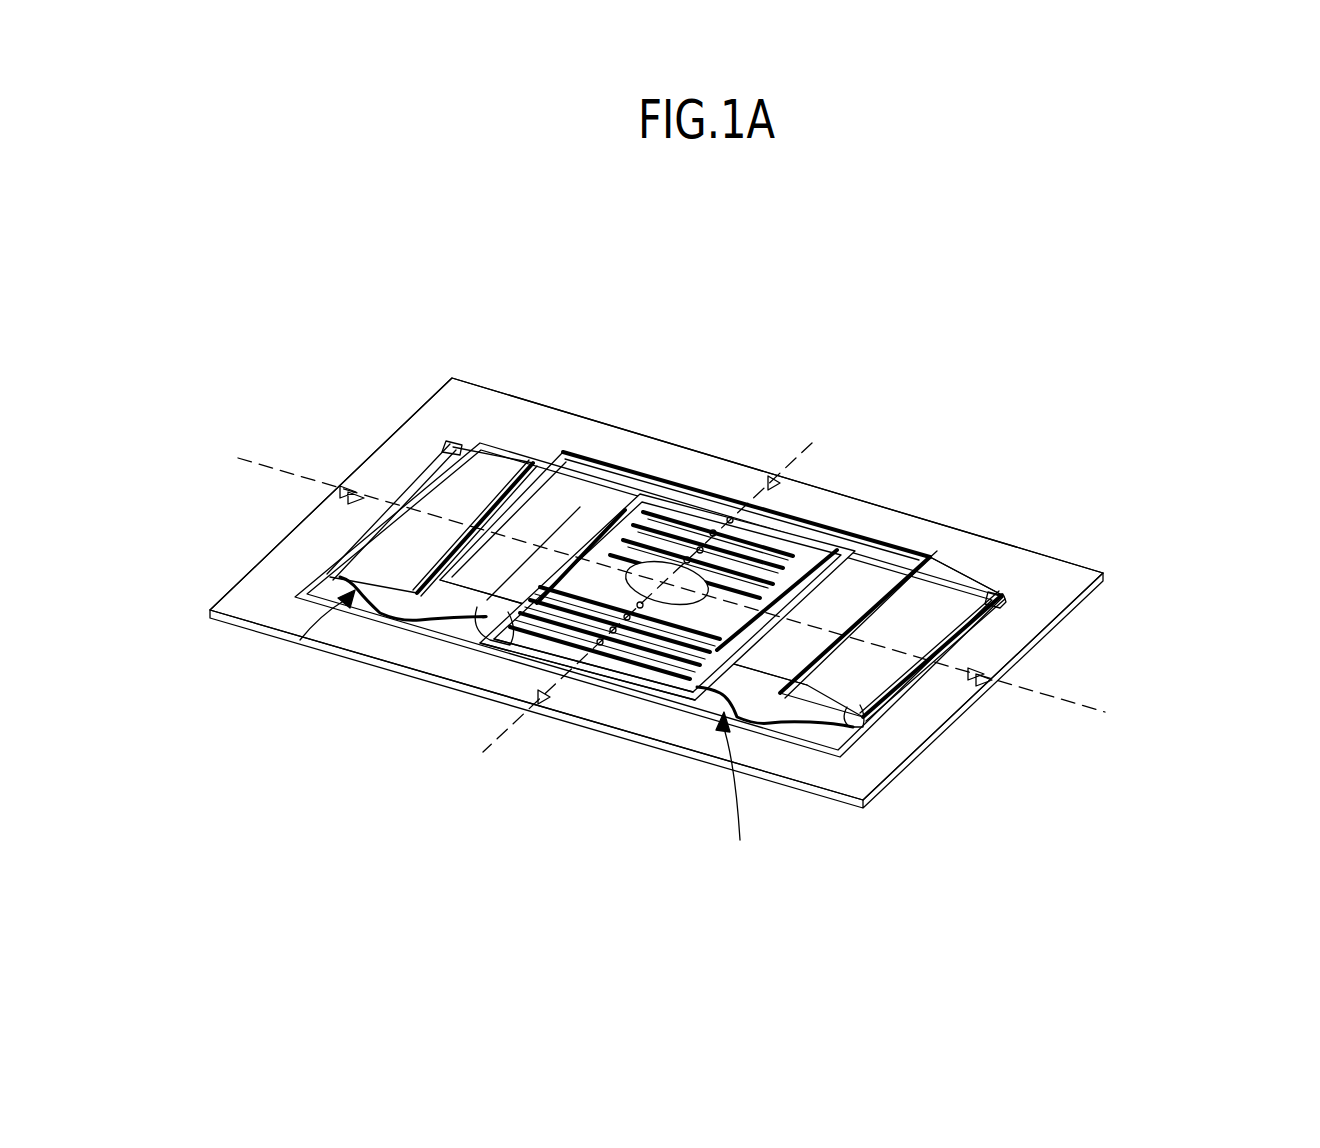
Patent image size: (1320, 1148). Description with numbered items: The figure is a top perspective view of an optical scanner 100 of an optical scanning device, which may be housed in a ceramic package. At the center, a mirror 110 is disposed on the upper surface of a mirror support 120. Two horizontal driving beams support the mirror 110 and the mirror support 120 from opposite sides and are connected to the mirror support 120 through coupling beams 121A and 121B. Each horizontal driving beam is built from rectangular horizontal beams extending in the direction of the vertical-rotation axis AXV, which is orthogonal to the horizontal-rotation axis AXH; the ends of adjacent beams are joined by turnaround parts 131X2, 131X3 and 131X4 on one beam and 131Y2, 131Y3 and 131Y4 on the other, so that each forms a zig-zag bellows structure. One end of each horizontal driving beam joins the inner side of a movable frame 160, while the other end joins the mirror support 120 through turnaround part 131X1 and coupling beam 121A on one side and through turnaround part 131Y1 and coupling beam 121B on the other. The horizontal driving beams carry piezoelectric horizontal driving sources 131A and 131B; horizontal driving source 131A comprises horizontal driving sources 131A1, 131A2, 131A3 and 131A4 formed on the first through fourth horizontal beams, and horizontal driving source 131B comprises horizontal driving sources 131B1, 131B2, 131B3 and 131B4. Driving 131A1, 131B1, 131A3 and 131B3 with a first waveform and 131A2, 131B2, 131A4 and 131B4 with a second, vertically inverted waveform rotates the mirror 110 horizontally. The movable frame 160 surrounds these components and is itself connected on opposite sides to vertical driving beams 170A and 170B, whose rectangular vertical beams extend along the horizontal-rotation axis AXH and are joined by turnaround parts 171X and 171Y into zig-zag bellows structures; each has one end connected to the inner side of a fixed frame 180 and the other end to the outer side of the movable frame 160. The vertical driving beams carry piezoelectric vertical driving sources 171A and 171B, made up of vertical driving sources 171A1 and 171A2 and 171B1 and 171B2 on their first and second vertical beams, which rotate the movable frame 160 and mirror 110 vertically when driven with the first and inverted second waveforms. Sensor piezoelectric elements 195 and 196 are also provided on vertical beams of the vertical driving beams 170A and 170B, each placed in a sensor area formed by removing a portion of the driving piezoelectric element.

The optical scanner 100 is at (244, 296).
The mirror 110 is at (687, 575).
The mirror support 120 is at (815, 653).
The coupling beam 121A is at (663, 485).
The coupling beam 121B is at (593, 575).
The horizontal driving source 131A is at (1068, 357).
The horizontal driving source 131A1 is at (717, 553).
The horizontal driving source 131A2 is at (740, 562).
The horizontal driving source 131A3 is at (767, 550).
The horizontal driving source 131A4 is at (793, 558).
The horizontal driving source 131B is at (716, 846).
The horizontal driving source 131B1 is at (680, 627).
The horizontal driving source 131B2 is at (657, 640).
The horizontal driving source 131B3 is at (633, 630).
The horizontal driving source 131B4 is at (607, 640).
The turnaround part 131X1 is at (640, 530).
The turnaround part 131X2 is at (700, 585).
The turnaround part 131X3 is at (605, 545).
The turnaround part 131X4 is at (735, 567).
The turnaround part 131Y1 is at (400, 605).
The turnaround part 131Y2 is at (730, 600).
The turnaround part 131Y3 is at (567, 572).
The turnaround part 131Y4 is at (790, 645).
The movable frame 160 is at (895, 727).
The vertical driving beam 170A is at (759, 791).
The vertical driving beam 170B is at (300, 640).
The vertical driving source 171A is at (1150, 432).
The vertical driving source 171A1 is at (935, 562).
The vertical driving source 171A2 is at (975, 600).
The vertical driving source 171B is at (382, 357).
The vertical driving source 171B1 is at (503, 460).
The vertical driving source 171B2 is at (580, 483).
The turnaround part 171X is at (765, 715).
The turnaround part 171Y is at (400, 610).
The fixed frame 180 is at (880, 738).
The sensor piezoelectric element 195 is at (955, 585).
The sensor piezoelectric element 196 is at (523, 473).
The horizontal-rotation axis AXH is at (659, 584).
The vertical-rotation axis AXV is at (700, 594).